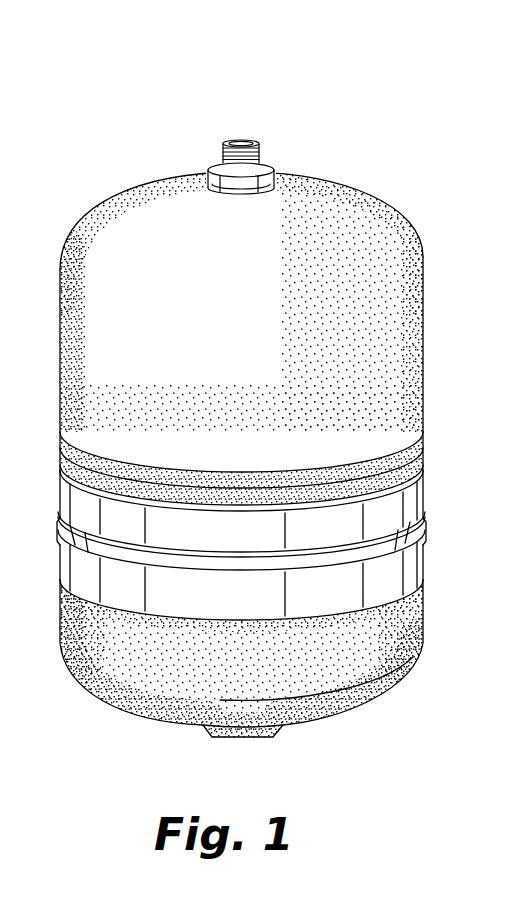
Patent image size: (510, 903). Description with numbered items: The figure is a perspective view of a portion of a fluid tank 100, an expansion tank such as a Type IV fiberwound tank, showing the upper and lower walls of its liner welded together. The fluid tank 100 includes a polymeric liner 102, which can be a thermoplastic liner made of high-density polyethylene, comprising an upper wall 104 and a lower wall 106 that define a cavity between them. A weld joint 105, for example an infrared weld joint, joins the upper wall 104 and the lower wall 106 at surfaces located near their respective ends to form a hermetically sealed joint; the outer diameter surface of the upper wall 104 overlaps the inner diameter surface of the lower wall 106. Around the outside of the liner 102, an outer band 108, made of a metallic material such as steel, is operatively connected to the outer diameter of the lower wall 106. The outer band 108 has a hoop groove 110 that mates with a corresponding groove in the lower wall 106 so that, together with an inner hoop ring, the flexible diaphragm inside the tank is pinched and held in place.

The fluid tank 100 is at (126, 152).
The polymeric liner 102 is at (425, 383).
The upper wall 104 is at (412, 300).
The weld joint 105 is at (167, 477).
The lower wall 106 is at (398, 640).
The outer band 108 is at (427, 478).
The hoop groove 110 is at (213, 552).